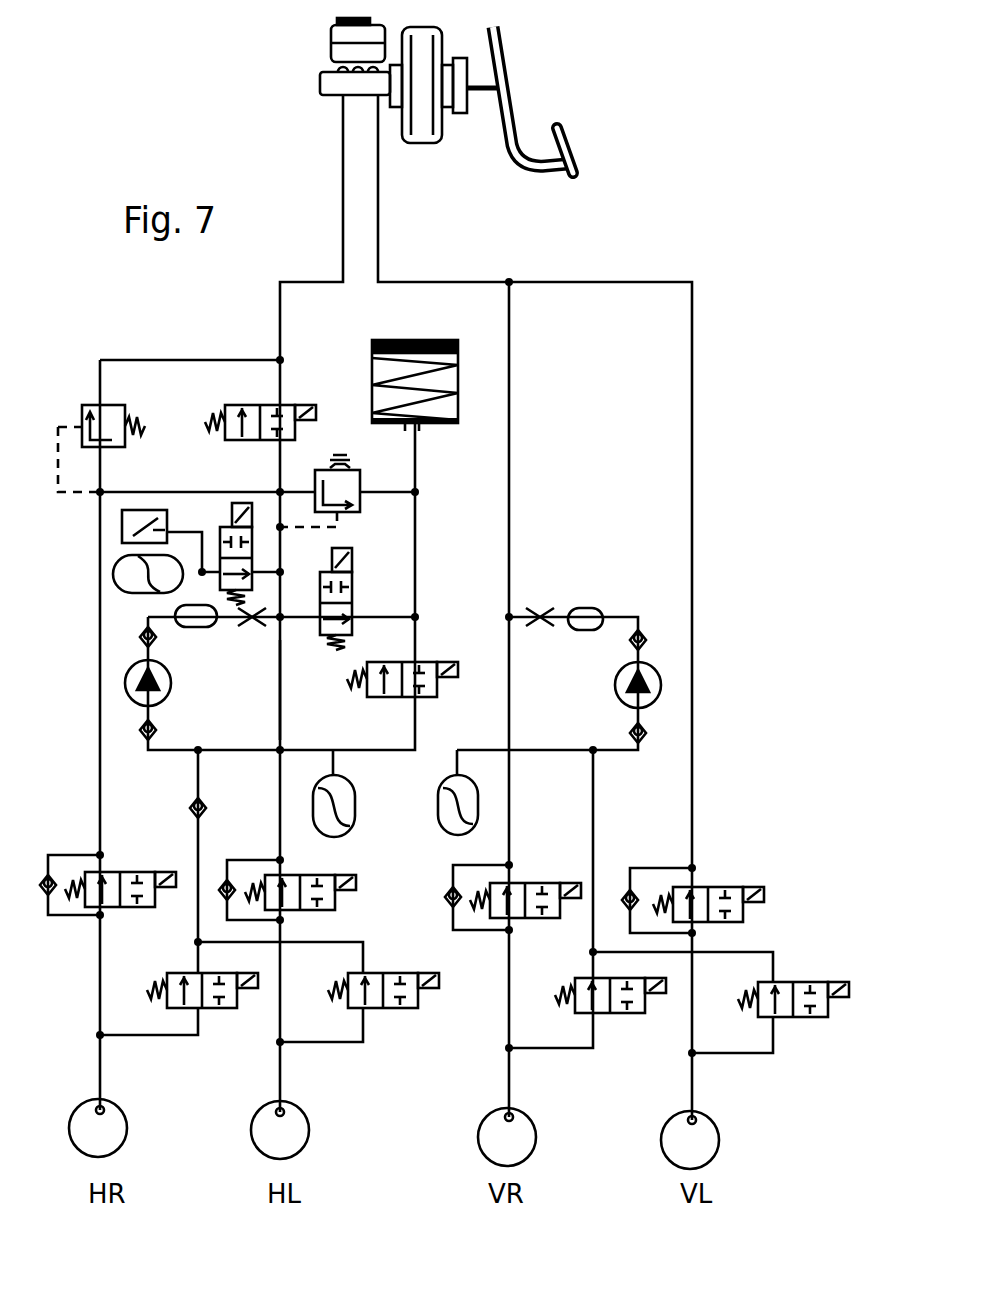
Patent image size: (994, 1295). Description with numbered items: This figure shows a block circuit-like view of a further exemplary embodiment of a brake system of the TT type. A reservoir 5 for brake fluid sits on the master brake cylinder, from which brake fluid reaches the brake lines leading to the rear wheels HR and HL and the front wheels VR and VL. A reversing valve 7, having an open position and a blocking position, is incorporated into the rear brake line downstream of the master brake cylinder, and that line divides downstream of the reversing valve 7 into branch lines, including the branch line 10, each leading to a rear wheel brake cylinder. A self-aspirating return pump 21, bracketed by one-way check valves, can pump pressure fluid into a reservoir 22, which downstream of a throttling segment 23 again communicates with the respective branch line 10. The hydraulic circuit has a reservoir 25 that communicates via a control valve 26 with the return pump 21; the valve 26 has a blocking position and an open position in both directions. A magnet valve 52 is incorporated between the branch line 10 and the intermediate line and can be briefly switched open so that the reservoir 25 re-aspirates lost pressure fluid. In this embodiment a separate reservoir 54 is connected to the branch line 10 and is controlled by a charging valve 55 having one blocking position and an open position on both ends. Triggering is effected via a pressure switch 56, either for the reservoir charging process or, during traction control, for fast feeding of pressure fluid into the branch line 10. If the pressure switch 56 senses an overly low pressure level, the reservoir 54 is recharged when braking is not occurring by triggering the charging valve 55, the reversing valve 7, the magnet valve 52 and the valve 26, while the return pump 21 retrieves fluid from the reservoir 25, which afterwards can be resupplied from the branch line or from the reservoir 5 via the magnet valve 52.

The reservoir 5 is at (340, 50).
The reversing valve 7 is at (293, 402).
The reservoir 25 is at (458, 397).
The pressure switch 56 is at (122, 537).
The charging valve 55 is at (227, 524).
The reservoir 54 is at (130, 593).
The reservoir 22 is at (217, 628).
The throttling segment 23 is at (396, 641).
The self-aspirating return pump 21 is at (165, 698).
The branch line 10 is at (280, 697).
The magnet valve 52 is at (355, 602).
The control valve 26 is at (423, 658).